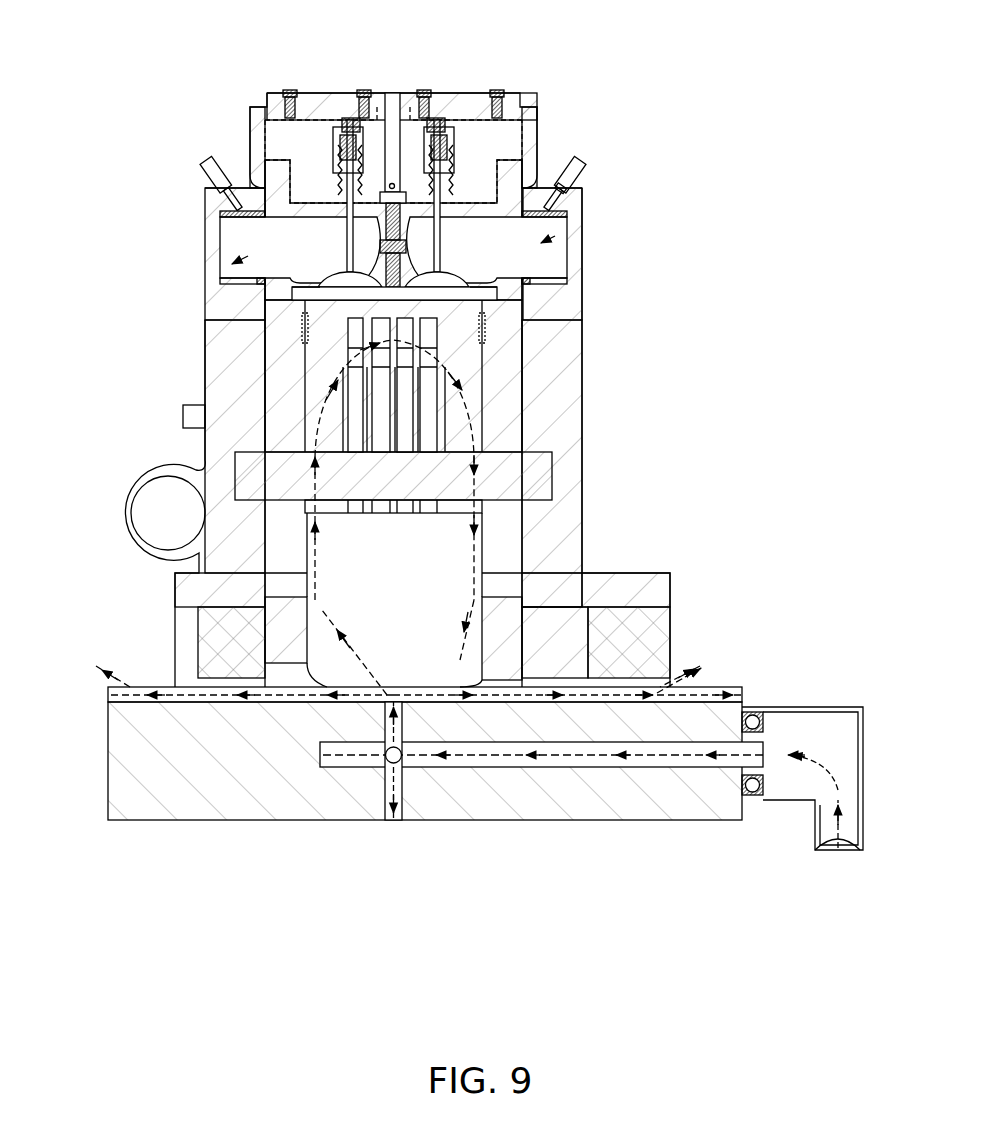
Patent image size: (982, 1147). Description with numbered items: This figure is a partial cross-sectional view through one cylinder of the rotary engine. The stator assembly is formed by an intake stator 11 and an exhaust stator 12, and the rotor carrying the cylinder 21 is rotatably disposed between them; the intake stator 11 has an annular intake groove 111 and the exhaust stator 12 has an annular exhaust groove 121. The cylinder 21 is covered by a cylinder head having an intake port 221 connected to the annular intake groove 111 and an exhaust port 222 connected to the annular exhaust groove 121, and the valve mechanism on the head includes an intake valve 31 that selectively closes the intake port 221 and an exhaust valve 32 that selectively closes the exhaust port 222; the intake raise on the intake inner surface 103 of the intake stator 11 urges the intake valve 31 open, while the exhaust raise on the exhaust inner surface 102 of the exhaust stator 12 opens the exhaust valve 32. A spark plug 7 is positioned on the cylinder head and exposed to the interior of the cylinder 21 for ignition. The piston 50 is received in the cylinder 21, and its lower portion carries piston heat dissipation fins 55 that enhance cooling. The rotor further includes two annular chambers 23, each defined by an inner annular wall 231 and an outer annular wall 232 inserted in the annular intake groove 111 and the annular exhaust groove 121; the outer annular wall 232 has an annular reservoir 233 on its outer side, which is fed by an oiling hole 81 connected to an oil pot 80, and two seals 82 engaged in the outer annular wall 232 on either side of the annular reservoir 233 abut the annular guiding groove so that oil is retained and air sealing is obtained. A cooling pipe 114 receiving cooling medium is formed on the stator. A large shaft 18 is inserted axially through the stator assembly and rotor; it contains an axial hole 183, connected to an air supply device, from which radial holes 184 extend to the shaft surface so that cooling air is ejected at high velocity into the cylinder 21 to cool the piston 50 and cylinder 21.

The spark plug 7 is at (394, 188).
The intake stator 11 is at (557, 403).
The exhaust stator 12 is at (212, 220).
The shaft 18 is at (570, 803).
The cylinder 21 is at (467, 652).
The annular chamber 23 is at (244, 257).
The intake valve 31 is at (445, 290).
The exhaust valve 32 is at (343, 288).
The piston 50 is at (318, 356).
The piston heat dissipation fins 55 is at (343, 427).
The oil pot 80 is at (543, 188).
The oiling hole 81 is at (548, 207).
The seal 82 is at (216, 214).
The exhaust inner surface 102 is at (310, 242).
The intake inner surface 103 is at (467, 233).
The annular intake groove 111 is at (567, 255).
The cooling pipe 114 is at (145, 552).
The annular exhaust groove 121 is at (224, 244).
The axial hole 183 is at (490, 753).
The radial hole 184 is at (387, 715).
The intake port 221 is at (478, 238).
The exhaust port 222 is at (318, 233).
The inner annular wall 231 is at (527, 288).
The outer annular wall 232 is at (568, 213).
The annular reservoir 233 is at (226, 216).